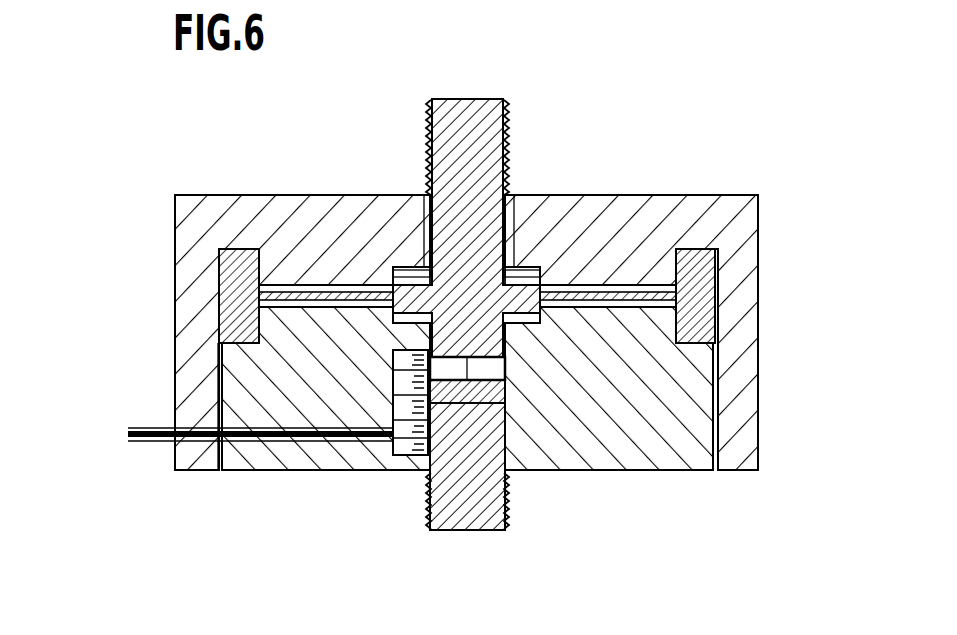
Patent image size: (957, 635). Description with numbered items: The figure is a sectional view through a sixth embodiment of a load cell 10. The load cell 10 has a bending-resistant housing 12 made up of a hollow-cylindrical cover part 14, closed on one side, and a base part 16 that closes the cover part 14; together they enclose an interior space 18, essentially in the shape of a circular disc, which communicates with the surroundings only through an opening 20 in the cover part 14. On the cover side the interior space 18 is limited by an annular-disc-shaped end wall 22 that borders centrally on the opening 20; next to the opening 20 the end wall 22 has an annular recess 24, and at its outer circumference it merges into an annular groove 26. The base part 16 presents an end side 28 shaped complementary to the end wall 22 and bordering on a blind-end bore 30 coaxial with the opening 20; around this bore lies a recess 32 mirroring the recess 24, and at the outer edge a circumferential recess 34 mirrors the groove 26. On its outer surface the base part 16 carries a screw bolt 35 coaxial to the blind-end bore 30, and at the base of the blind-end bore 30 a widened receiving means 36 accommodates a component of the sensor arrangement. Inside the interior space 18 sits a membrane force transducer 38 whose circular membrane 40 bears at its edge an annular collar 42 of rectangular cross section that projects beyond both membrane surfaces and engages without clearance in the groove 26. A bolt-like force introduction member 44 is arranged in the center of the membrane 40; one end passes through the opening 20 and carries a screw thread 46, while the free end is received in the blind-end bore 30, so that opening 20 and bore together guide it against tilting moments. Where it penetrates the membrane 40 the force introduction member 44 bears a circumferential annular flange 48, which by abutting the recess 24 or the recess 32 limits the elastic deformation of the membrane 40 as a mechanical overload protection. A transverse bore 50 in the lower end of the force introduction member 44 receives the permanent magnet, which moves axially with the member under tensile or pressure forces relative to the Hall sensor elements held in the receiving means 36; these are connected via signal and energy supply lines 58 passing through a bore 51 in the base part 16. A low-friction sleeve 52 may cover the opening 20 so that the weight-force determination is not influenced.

The load cell 10 is at (668, 140).
The housing 12 is at (208, 487).
The cover part 14 is at (782, 218).
The base part 16 is at (710, 490).
The interior space 18 is at (345, 296).
The opening 20 is at (524, 170).
The end wall 22 is at (595, 296).
The recess 24 is at (548, 282).
The annular groove 26 is at (700, 258).
The end side 28 is at (665, 313).
The blind-end bore 30 is at (458, 405).
The recess 32 is at (572, 312).
The recess 34 is at (712, 330).
The screw bolt 35 is at (455, 516).
The receiving means 36 is at (417, 375).
The membrane force transducer 38 is at (300, 336).
The membrane 40 is at (283, 300).
The annular collar 42 is at (700, 290).
The force introduction member 44 is at (434, 78).
The screw thread 46 is at (430, 119).
The annular flange 48 is at (400, 275).
The transverse bore 50 is at (510, 364).
The bore 51 is at (305, 428).
The sleeve 52 is at (396, 197).
The signal and energy supply lines 58 is at (144, 458).